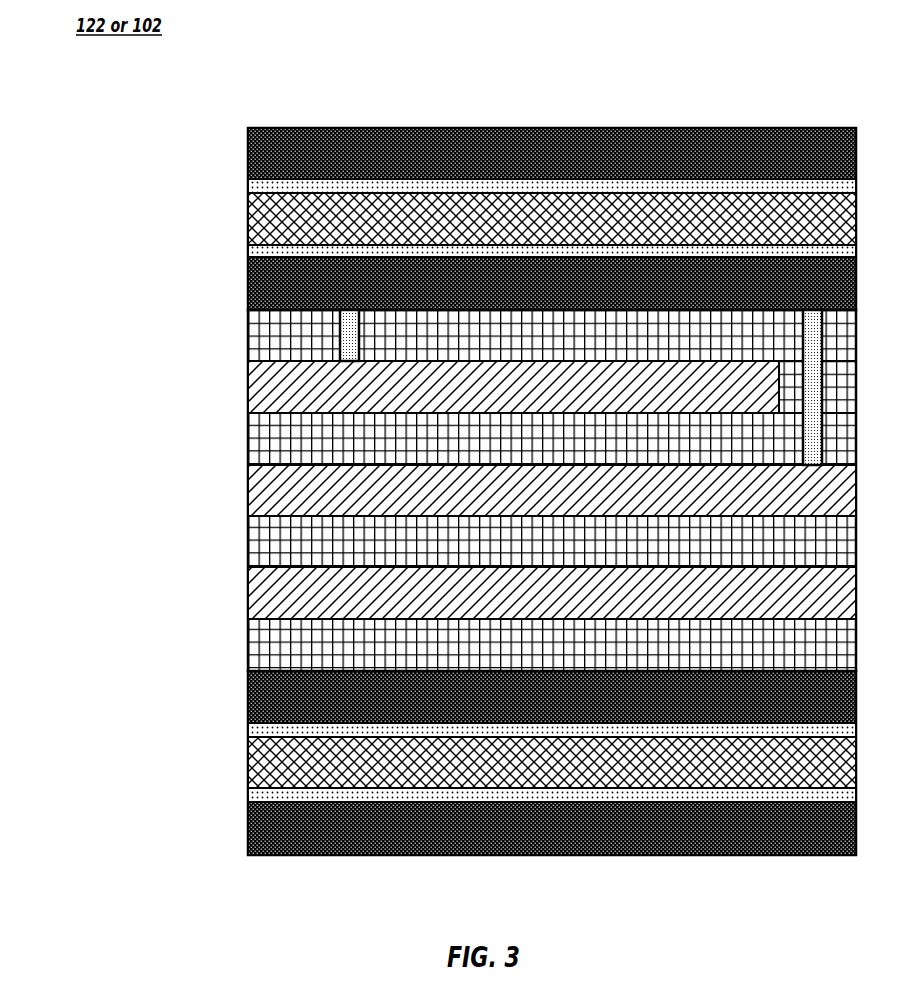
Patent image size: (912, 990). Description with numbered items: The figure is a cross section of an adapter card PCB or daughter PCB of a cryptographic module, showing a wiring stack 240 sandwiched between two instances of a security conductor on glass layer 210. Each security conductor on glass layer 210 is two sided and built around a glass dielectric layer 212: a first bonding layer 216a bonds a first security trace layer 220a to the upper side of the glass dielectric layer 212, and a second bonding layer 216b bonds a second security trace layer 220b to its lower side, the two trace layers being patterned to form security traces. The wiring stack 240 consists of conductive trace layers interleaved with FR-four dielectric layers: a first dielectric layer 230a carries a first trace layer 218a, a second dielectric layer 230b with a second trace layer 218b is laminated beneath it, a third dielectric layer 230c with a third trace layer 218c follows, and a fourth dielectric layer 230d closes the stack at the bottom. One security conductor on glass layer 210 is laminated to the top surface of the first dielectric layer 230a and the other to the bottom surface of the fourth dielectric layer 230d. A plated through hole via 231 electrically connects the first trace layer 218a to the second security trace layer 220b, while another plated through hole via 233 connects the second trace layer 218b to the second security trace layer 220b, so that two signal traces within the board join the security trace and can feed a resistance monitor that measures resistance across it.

The security conductor on glass layer 210 is at (107, 129).
The glass dielectric layer 212 is at (248, 215).
The first bonding layer 216a is at (248, 185).
The second bonding layer 216b is at (248, 251).
The first security trace layer 220a is at (248, 147).
The second security trace layer 220b is at (248, 279).
The wiring stack 240 is at (107, 312).
The first dielectric layer 230a is at (248, 342).
The second dielectric layer 230b is at (248, 440).
The third dielectric layer 230c is at (248, 543).
The fourth dielectric layer 230d is at (248, 643).
The first trace layer 218a is at (248, 384).
The second trace layer 218b is at (248, 491).
The third trace layer 218c is at (248, 594).
The plated through hole via 231 is at (350, 323).
The plated through hole via 233 is at (812, 337).